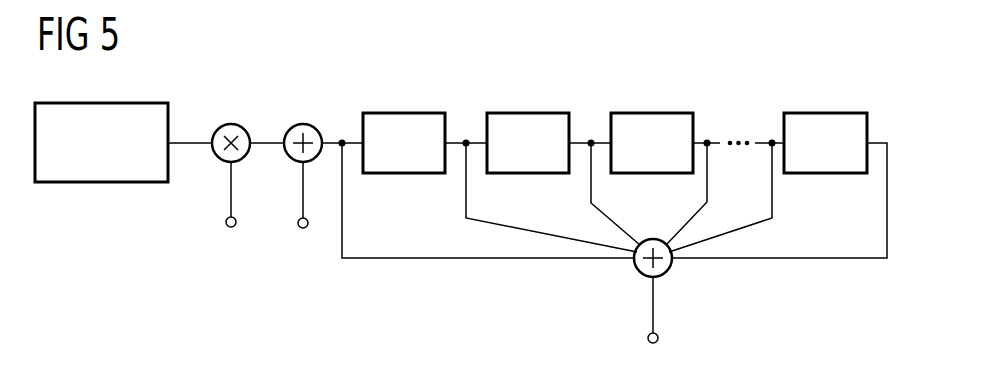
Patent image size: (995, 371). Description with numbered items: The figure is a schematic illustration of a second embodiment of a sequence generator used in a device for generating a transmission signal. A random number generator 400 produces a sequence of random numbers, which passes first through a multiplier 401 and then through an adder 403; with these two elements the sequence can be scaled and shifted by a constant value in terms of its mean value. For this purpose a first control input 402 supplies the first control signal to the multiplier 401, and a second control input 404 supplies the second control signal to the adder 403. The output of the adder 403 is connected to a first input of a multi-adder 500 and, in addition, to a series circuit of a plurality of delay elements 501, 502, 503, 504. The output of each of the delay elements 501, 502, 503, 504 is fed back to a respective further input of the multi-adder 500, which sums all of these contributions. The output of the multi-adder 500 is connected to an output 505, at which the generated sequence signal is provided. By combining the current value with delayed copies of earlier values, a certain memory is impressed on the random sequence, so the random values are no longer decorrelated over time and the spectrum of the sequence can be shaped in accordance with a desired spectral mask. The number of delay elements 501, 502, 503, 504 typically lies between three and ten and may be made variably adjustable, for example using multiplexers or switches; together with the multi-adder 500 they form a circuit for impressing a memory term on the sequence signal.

The random number generator 400 is at (102, 182).
The multiplier 401 is at (231, 124).
The first control input 402 is at (226, 222).
The adder 403 is at (303, 124).
The second control input 404 is at (303, 228).
The multi-adder 500 is at (653, 239).
The delay element 501 is at (403, 113).
The delay element 502 is at (527, 113).
The delay element 503 is at (652, 113).
The delay element 504 is at (826, 113).
The output 505 is at (648, 338).